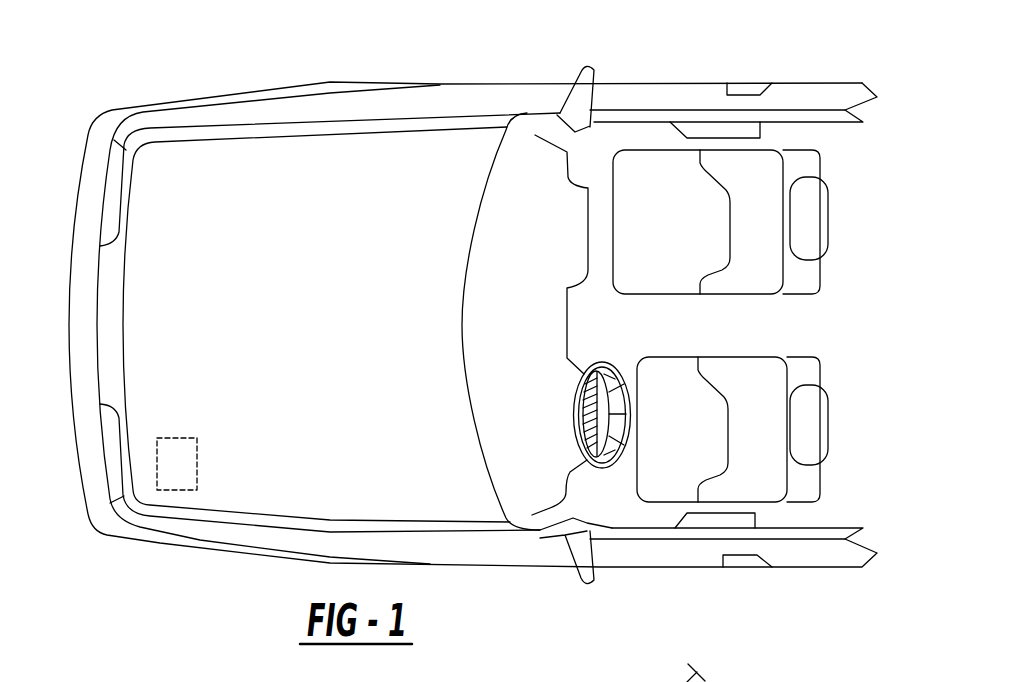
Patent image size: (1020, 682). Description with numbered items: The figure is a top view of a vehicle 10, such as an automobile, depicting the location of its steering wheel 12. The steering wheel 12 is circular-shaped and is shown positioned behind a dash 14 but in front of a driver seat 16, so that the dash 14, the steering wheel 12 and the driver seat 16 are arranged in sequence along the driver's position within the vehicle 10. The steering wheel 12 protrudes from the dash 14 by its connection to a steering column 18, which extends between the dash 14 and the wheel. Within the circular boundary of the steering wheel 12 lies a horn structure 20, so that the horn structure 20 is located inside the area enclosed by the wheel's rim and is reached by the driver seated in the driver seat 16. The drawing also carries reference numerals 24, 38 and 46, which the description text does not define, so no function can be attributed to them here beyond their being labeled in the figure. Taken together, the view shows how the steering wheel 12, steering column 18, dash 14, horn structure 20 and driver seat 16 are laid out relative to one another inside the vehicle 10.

The vehicle 10 is at (197, 96).
The steering wheel 12 is at (617, 363).
The dash 14 is at (525, 415).
The driver seat 16 is at (808, 502).
The steering column 18 is at (577, 470).
The horn structure 20 is at (650, 423).
The controller 24 is at (177, 490).
The reference numeral 38 is at (450, 675).
The reference numeral 46 is at (528, 681).